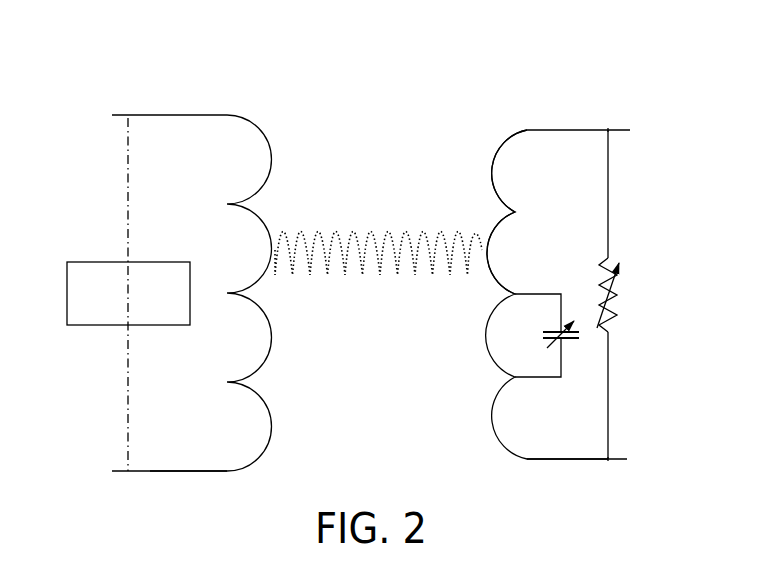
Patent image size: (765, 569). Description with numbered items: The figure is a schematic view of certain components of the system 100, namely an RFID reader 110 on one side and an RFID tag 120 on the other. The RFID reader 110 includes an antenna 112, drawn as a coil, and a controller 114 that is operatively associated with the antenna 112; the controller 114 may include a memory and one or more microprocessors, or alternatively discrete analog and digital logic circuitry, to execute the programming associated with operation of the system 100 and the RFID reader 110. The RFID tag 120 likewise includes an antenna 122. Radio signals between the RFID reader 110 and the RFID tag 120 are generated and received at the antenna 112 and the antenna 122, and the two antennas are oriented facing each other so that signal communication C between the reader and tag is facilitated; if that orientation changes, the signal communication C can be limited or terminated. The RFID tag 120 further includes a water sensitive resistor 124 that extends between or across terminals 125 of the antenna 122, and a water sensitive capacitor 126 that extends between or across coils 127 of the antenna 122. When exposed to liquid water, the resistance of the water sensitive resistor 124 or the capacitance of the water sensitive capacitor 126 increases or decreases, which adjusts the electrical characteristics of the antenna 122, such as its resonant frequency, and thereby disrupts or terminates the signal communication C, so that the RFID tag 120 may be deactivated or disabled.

The system 100 is at (107, 83).
The RFID reader 110 is at (107, 115).
The antenna 112 is at (205, 471).
The controller 114 is at (128, 293).
The signal communication C is at (369, 232).
The RFID tag 120 is at (636, 130).
The antenna 122 is at (550, 459).
The water sensitive resistor 124 is at (620, 293).
The terminals 125 is at (606, 128).
The water sensitive capacitor 126 is at (553, 332).
The coils 127 is at (482, 172).